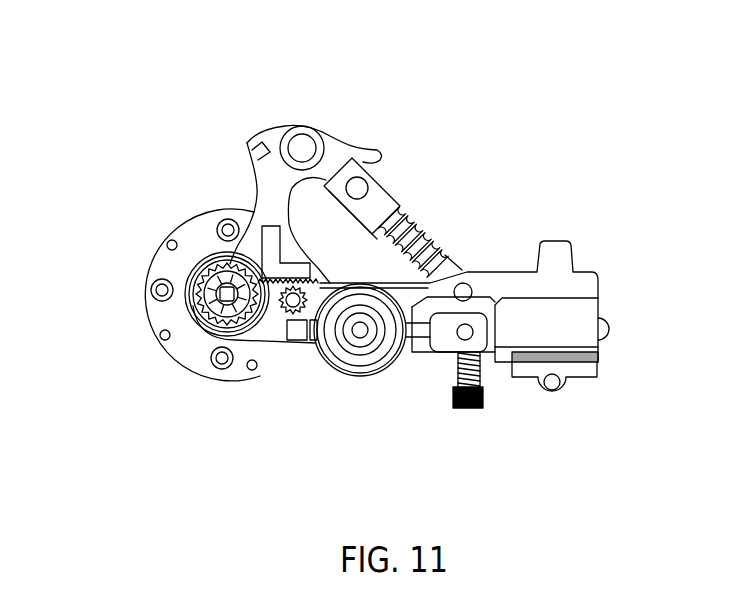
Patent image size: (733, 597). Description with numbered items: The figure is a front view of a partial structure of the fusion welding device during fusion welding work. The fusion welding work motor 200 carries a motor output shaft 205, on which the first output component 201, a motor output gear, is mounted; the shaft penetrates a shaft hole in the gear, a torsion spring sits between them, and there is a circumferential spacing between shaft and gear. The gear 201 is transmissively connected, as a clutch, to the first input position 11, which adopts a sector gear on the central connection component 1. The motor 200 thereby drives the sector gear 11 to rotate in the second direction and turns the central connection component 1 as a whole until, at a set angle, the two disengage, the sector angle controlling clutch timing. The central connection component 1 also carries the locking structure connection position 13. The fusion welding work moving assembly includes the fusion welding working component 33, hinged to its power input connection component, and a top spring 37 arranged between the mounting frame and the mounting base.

The central connection component 1 is at (273, 200).
The first input position 11 is at (300, 320).
The locking structure connection position 13 is at (338, 153).
The fusion welding working component 33 is at (580, 358).
The top spring 37 is at (480, 387).
The fusion welding work motor 200 is at (185, 230).
The first output component 201 is at (227, 295).
The motor output shaft 205 is at (207, 323).